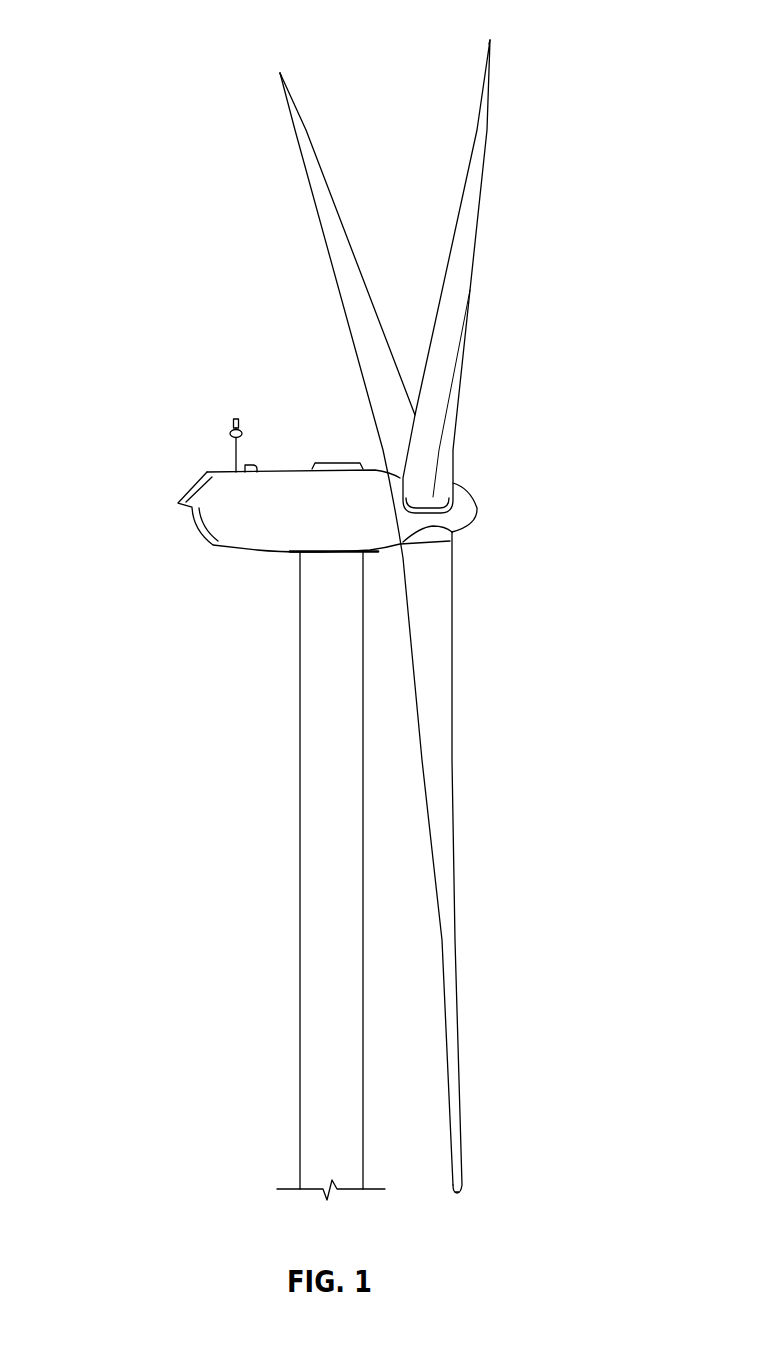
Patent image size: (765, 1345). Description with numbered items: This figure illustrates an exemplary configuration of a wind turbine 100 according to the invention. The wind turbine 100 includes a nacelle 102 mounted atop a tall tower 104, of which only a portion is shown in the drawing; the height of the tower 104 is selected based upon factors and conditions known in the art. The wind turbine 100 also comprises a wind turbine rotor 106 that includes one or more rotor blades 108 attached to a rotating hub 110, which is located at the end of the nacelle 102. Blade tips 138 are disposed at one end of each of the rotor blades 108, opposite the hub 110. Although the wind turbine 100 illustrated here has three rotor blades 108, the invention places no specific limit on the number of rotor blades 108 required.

The wind turbine 100 is at (132, 44).
The nacelle 102 is at (228, 545).
The tower 104 is at (298, 810).
The wind turbine rotor 106 is at (536, 303).
The rotor blades 108 is at (302, 112).
The rotating hub 110 is at (477, 508).
The blade tips 138 is at (281, 74).